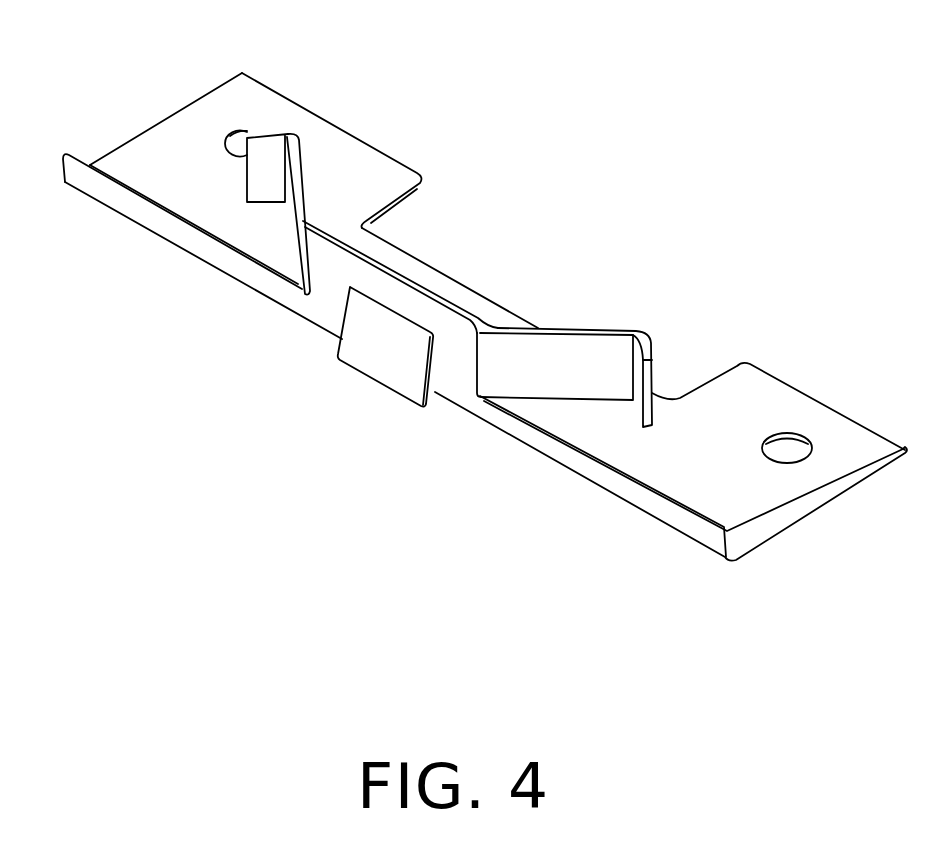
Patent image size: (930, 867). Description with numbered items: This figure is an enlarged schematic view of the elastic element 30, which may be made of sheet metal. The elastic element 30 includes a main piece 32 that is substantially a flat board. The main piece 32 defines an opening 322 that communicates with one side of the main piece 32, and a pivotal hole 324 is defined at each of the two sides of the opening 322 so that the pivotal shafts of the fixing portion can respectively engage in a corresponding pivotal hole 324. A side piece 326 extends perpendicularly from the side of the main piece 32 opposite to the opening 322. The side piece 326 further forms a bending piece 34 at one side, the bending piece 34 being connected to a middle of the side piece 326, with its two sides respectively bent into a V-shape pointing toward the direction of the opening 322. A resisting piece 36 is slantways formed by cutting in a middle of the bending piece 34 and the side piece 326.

The elastic element 30 is at (362, 102).
The main piece 32 is at (168, 145).
The opening 322 is at (438, 232).
The pivotal hole 324 is at (237, 143).
The side piece 326 is at (688, 517).
The bending piece 34 is at (570, 365).
The resisting piece 36 is at (392, 355).